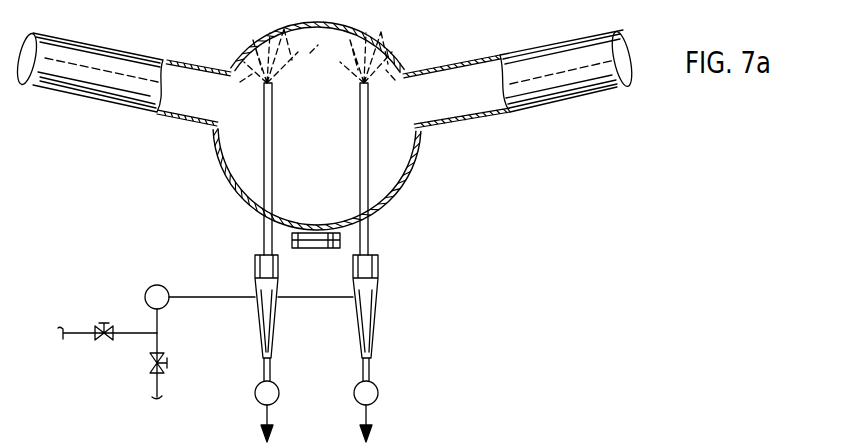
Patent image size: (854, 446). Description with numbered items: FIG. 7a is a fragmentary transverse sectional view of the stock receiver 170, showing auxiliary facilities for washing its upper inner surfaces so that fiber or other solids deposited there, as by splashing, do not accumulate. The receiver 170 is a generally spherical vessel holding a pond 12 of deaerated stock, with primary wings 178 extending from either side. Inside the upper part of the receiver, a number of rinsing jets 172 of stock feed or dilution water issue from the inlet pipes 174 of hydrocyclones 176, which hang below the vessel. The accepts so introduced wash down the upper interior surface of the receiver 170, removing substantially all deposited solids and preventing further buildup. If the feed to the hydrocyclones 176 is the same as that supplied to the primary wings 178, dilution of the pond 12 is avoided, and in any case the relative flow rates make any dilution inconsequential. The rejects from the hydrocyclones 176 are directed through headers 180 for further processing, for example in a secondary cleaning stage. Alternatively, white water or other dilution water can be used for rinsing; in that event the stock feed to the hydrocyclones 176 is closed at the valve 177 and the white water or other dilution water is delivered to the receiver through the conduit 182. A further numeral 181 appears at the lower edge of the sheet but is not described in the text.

The pond of deaerated stock 12 is at (321, 187).
The receiver 170 is at (262, 38).
The rinsing jets 172 is at (310, 53).
The inlet pipes 174 is at (361, 113).
The hydrocyclones 176 is at (353, 266).
The closure 177 is at (148, 364).
The primary wings 178 is at (103, 84).
The headers 180 is at (354, 392).
The outlet 181 is at (449, 440).
The conduit 182 is at (80, 325).